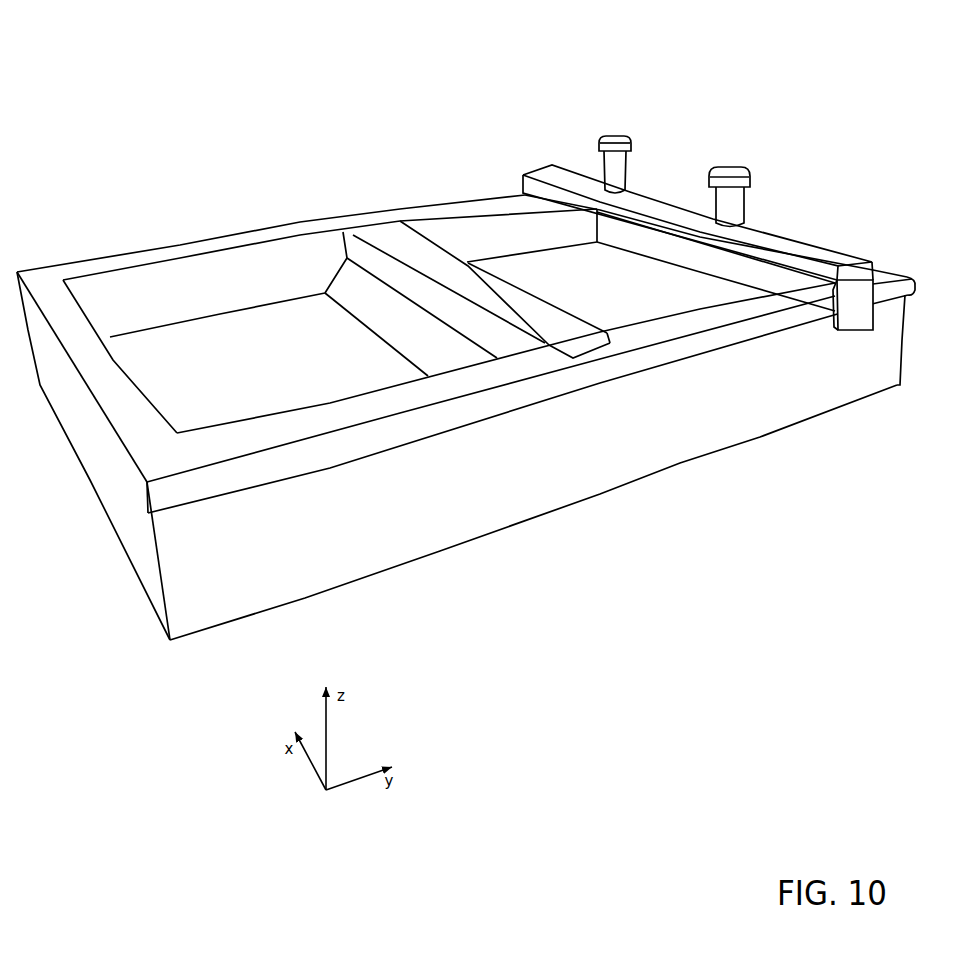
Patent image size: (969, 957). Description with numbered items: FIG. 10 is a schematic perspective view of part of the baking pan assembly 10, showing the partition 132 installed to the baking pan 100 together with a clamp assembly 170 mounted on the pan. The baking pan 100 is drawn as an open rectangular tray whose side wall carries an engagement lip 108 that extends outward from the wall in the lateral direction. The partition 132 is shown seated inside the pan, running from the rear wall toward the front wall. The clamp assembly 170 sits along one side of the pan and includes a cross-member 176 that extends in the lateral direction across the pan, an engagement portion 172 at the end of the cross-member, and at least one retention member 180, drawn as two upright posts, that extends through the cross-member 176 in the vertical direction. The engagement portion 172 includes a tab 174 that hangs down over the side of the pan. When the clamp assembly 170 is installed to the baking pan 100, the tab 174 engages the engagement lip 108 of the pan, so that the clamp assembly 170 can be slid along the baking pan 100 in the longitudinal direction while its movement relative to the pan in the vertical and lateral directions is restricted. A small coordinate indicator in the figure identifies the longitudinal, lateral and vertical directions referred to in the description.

The baking pan assembly 10 is at (477, 327).
The baking pan 100 is at (466, 349).
The engagement lip 108 is at (662, 362).
The partition 132 is at (520, 298).
The clamp assembly 170 is at (730, 276).
The engagement portion 172 is at (880, 371).
The tab 174 is at (823, 331).
The cross-member 176 is at (662, 202).
The retention member 180 is at (620, 135).